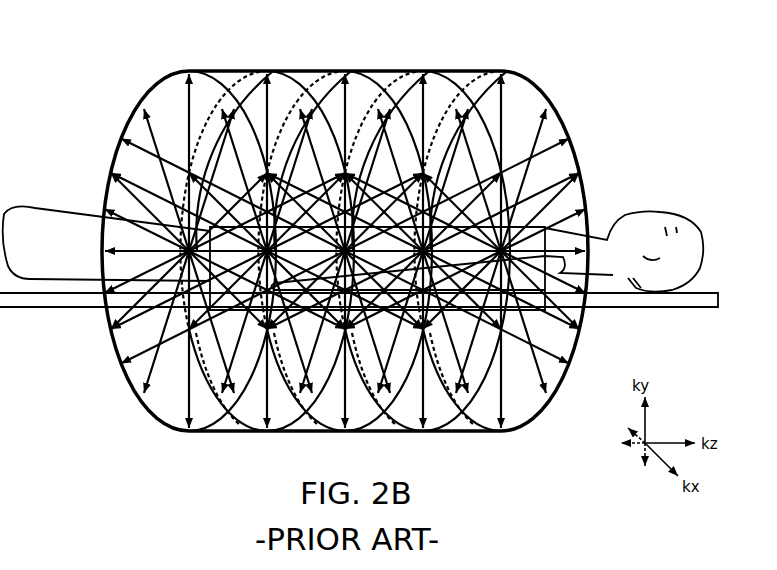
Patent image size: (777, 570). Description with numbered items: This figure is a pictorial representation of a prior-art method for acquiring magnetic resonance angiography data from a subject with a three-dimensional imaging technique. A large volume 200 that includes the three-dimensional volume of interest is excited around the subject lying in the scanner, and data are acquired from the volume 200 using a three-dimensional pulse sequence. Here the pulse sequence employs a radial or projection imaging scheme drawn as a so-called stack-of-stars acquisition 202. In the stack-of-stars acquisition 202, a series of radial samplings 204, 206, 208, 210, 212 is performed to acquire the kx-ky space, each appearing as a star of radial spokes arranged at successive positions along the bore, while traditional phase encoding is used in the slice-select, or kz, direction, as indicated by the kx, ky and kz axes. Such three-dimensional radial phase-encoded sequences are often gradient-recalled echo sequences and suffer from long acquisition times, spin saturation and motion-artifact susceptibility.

The volume 200 is at (206, 382).
The stack-of-stars acquisition 202 is at (119, 375).
The radial sampling 204 is at (226, 90).
The radial sampling 206 is at (305, 90).
The radial sampling 208 is at (383, 92).
The radial sampling 210 is at (461, 92).
The radial sampling 212 is at (539, 94).